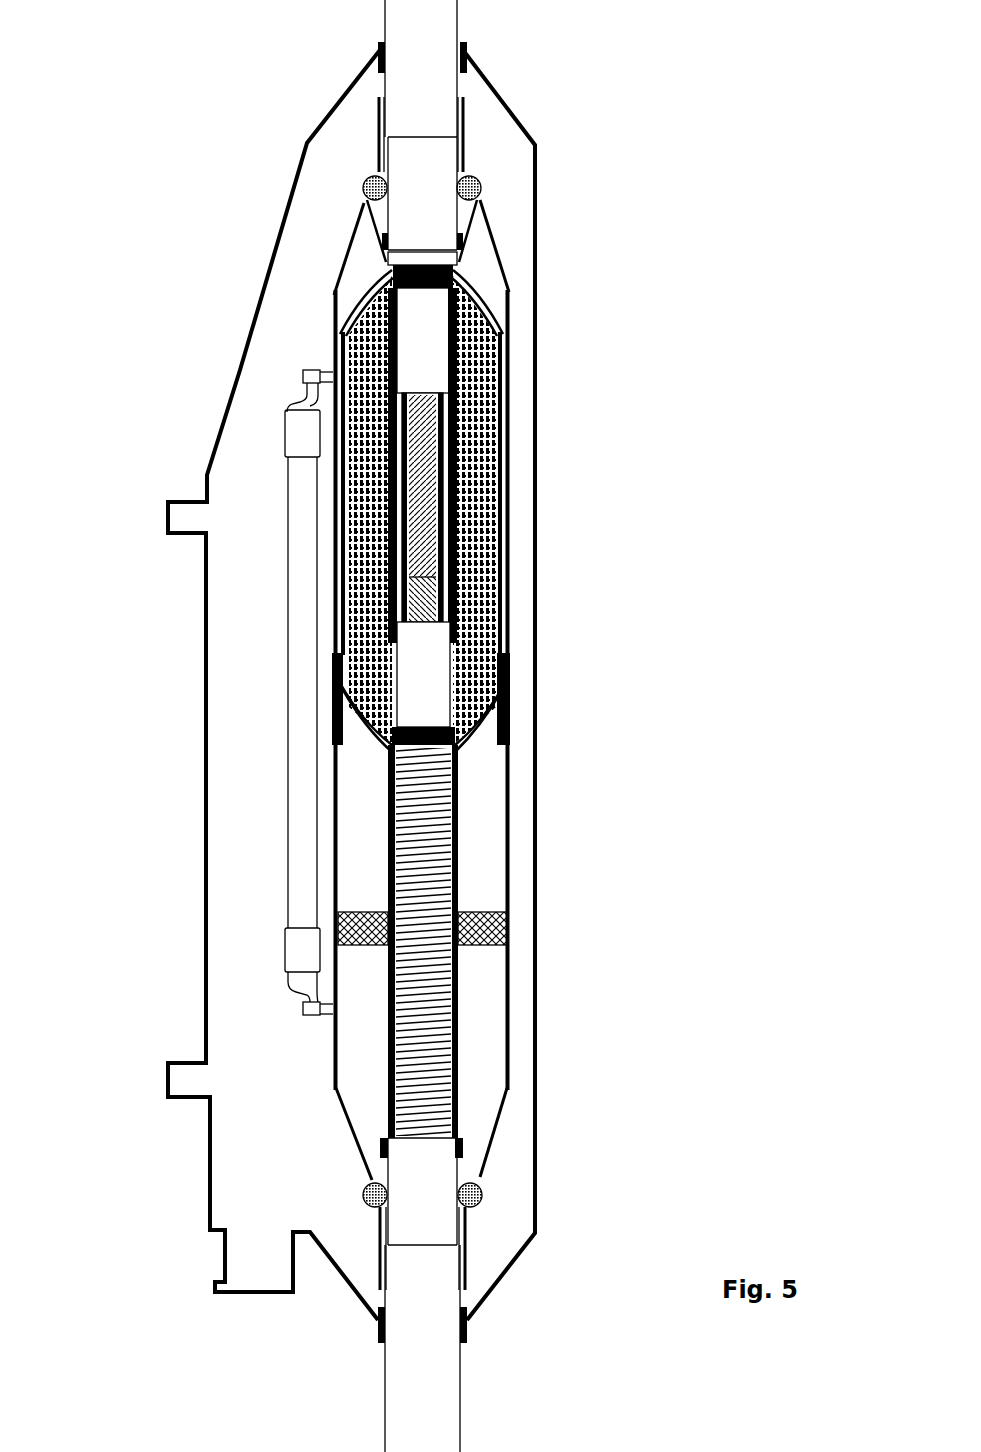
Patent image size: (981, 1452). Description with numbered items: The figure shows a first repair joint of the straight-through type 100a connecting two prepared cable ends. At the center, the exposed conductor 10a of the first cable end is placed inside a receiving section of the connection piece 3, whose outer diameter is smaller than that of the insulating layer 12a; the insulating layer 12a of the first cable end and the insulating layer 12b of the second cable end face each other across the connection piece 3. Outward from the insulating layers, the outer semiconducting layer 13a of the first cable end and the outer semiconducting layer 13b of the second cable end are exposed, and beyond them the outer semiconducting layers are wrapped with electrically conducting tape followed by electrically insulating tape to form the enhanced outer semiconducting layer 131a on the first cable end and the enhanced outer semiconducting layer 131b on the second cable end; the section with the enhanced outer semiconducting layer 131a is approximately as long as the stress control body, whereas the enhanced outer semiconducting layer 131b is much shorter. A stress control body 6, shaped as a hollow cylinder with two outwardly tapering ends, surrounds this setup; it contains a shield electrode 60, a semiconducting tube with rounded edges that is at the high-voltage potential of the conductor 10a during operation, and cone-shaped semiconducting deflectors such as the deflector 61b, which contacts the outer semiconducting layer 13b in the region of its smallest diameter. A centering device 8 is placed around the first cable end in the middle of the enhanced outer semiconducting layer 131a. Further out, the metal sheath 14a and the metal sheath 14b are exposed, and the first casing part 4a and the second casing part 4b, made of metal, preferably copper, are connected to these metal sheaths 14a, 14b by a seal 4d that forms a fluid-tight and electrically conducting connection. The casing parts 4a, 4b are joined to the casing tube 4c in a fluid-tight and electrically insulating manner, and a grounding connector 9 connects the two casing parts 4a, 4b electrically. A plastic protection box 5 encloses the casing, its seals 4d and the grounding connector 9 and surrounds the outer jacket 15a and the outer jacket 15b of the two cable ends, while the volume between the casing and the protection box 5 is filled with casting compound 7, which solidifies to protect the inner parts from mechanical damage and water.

The first repair joint of the straight-through type 100a is at (369, 726).
The connection piece 3 is at (335, 535).
The first casing part 4a is at (335, 1105).
The second casing part 4b is at (328, 312).
The casing tube 4c is at (333, 700).
The seal 4d is at (485, 1190).
The protection box 5 is at (203, 610).
The stress control body 6 is at (503, 443).
The casting compound 7 is at (270, 840).
The centering device 8 is at (490, 922).
The grounding connector 9 is at (297, 768).
The conductor 10a is at (443, 602).
The insulating layer 12a is at (435, 680).
The insulating layer 12b is at (430, 365).
The outer semiconducting layer 13a is at (440, 727).
The outer semiconducting layer 13b is at (460, 270).
The metal sheath 14a is at (438, 1182).
The metal sheath 14b is at (438, 213).
The outer jacket 15a is at (428, 1300).
The outer jacket 15b is at (437, 105).
The shield electrode 60 is at (462, 533).
The deflector 61b is at (470, 303).
The enhanced outer semiconducting layer 131a is at (440, 825).
The enhanced outer semiconducting layer 131b is at (443, 257).